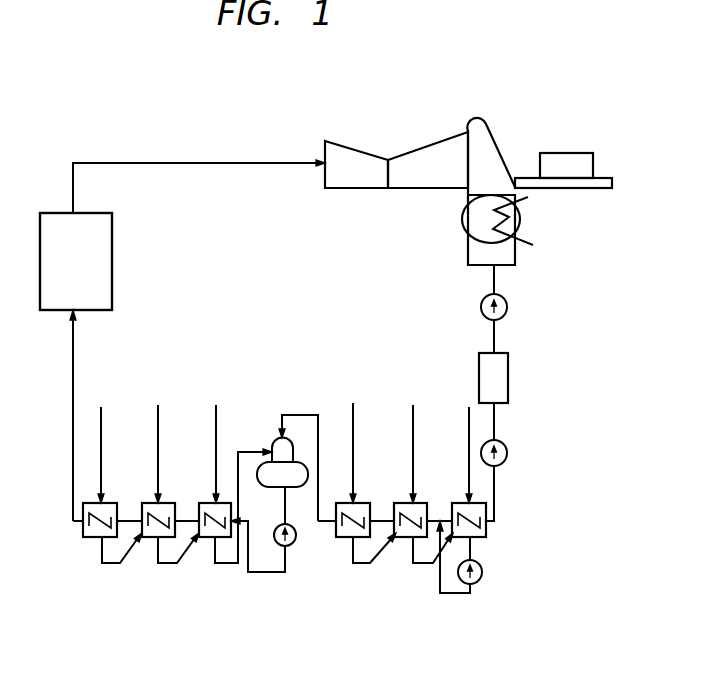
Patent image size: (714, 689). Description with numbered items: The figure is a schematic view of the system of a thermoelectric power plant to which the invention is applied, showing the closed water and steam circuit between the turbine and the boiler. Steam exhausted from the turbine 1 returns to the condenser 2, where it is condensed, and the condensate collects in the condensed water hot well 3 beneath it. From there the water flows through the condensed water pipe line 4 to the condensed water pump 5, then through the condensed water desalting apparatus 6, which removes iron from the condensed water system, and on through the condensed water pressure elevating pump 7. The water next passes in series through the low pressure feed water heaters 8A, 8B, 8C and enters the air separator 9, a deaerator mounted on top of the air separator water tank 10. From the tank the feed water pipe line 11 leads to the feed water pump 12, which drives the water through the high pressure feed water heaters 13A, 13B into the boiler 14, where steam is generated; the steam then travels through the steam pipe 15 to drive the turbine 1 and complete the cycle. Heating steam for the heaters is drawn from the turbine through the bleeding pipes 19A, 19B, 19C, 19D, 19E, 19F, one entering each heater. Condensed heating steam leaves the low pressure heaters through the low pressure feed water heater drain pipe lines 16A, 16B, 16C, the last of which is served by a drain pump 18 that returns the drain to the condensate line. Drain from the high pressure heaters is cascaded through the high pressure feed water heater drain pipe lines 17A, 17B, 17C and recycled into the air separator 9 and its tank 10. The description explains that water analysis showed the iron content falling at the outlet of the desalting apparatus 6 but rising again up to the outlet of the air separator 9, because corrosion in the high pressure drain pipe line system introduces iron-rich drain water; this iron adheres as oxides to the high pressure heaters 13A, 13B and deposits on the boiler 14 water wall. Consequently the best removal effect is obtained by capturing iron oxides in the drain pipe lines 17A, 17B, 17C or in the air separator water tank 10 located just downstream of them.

The turbine 1 is at (431, 137).
The condenser 2 is at (518, 210).
The condensed water hot well 3 is at (505, 253).
The condensed water pipe line 4 is at (494, 282).
The condensed water pump 5 is at (507, 309).
The condensed water desalting apparatus 6 is at (508, 380).
The condensed water pressure elevating pump 7 is at (507, 451).
The low pressure feed water heater 8A is at (462, 508).
The low pressure feed water heater 8B is at (404, 508).
The low pressure feed water heater 8C is at (346, 508).
The air separator 9 is at (291, 447).
The air separator water tank 10 is at (295, 487).
The feed water pipe line 11 is at (285, 508).
The feed water pump 12 is at (296, 540).
The high pressure feed water heater 13A is at (89, 502).
The high pressure feed water heater 13B is at (148, 509).
The boiler 14 is at (112, 265).
The steam pipe 15 is at (223, 163).
The low pressure feed water heater drain pipe line 16A is at (357, 566).
The low pressure feed water heater drain pipe line 16B is at (420, 566).
The low pressure feed water heater drain pipe line 16C is at (460, 595).
The high pressure feed water heater drain pipe line 17A is at (113, 566).
The high pressure feed water heater drain pipe line 17B is at (168, 566).
The high pressure feed water heater drain pipe line 17C is at (226, 566).
The drain pump 18 is at (482, 572).
The bleeding pipe 19A is at (103, 408).
The bleeding pipe 19B is at (160, 408).
The bleeding pipe 19C is at (218, 410).
The bleeding pipe 19D is at (355, 408).
The bleeding pipe 19E is at (414, 408).
The bleeding pipe 19F is at (467, 415).